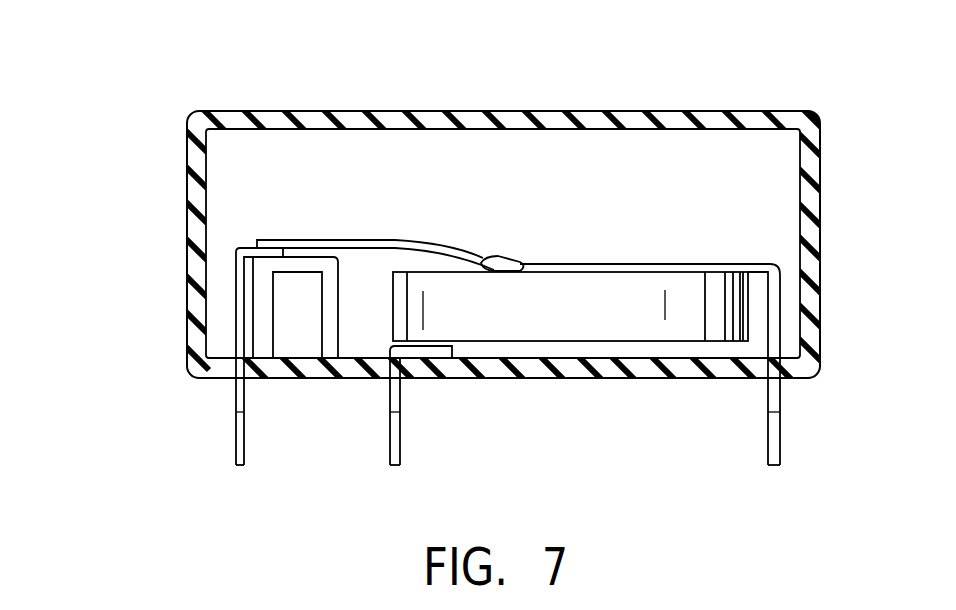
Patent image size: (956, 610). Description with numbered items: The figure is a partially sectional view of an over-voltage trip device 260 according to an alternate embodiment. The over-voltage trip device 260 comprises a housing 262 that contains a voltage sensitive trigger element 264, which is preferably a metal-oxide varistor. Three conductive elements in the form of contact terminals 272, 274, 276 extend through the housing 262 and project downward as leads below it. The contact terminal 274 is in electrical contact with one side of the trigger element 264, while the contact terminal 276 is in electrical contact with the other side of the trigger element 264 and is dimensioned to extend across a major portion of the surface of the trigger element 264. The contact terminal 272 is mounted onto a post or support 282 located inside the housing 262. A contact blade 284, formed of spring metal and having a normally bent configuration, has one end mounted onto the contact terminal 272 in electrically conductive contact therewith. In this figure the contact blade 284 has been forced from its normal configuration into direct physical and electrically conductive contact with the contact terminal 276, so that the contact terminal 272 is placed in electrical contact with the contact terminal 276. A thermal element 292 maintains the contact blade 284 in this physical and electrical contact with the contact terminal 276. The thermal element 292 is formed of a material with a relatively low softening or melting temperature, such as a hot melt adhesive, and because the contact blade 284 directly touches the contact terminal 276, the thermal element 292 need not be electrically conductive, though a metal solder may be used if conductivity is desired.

The over-voltage trip device 260 is at (276, 79).
The housing 262 is at (420, 117).
The voltage sensitive trigger element 264 is at (527, 318).
The contact terminal 272 is at (238, 400).
The contact terminal 274 is at (397, 440).
The contact terminal 276 is at (623, 266).
The post or support 282 is at (330, 306).
The contact blade 284 is at (310, 243).
The thermal element 292 is at (495, 258).